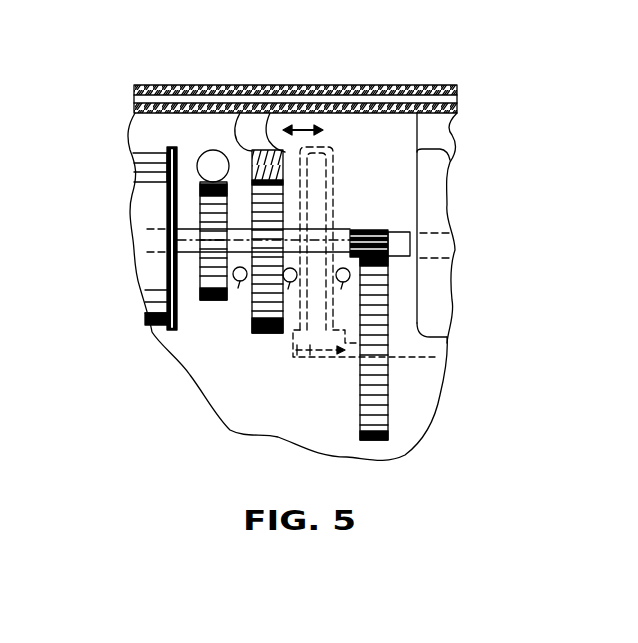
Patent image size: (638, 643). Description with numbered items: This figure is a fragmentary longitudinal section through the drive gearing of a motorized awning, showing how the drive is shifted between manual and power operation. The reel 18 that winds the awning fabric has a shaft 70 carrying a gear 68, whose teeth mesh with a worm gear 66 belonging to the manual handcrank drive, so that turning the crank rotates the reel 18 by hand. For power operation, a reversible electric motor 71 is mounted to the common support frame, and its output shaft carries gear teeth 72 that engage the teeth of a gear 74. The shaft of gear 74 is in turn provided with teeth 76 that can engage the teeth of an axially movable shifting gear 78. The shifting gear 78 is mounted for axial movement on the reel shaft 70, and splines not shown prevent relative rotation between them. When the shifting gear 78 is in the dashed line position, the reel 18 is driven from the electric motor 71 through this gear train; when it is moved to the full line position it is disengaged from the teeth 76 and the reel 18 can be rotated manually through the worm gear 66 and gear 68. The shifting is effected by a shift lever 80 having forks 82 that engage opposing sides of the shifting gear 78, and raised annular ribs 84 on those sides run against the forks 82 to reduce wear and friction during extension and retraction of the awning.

The reel 18 is at (153, 157).
The worm gear 66 is at (213, 170).
The gear 68 is at (205, 296).
The shaft 70 is at (414, 310).
The reversible electric motor 71 is at (420, 170).
The gear teeth 72 is at (368, 228).
The gear 74 is at (392, 405).
The teeth 76 is at (306, 352).
The shifting gear 78 is at (333, 147).
The shift lever 80 is at (303, 127).
The forks 82 is at (238, 283).
The raised annular ribs 84 is at (272, 113).